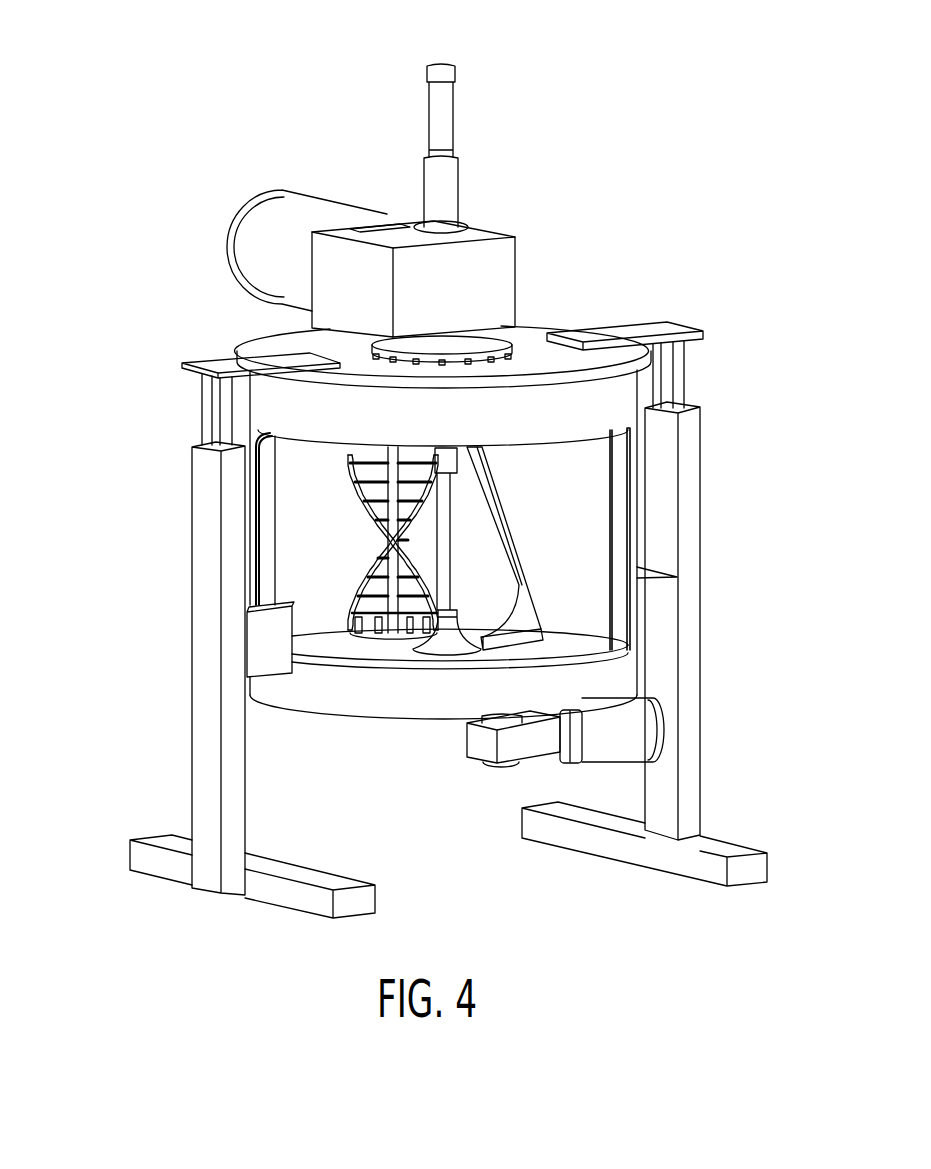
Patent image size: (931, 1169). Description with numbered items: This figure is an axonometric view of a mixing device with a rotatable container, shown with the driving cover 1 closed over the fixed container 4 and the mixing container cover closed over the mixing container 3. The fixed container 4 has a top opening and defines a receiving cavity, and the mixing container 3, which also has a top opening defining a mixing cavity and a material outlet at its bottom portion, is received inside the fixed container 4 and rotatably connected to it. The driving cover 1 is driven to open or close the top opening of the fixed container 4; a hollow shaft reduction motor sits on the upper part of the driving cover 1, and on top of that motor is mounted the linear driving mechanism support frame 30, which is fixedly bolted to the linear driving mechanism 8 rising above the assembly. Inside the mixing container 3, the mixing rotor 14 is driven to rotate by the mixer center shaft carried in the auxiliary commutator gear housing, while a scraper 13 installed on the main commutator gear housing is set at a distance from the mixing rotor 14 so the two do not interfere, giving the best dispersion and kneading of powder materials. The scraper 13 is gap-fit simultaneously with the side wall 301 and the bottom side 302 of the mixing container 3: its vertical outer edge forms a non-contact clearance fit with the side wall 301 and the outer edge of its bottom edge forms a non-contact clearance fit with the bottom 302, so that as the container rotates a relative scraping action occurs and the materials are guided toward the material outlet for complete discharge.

The driving cover 1 is at (583, 358).
The linear driving mechanism 8 is at (440, 107).
The linear driving mechanism support frame 30 is at (427, 180).
The mixing container 3 is at (612, 482).
The side wall 301 is at (527, 525).
The fixed container 4 is at (627, 563).
The scraper 13 is at (527, 583).
The bottom side 302 is at (541, 641).
The mixing rotor 14 is at (362, 582).